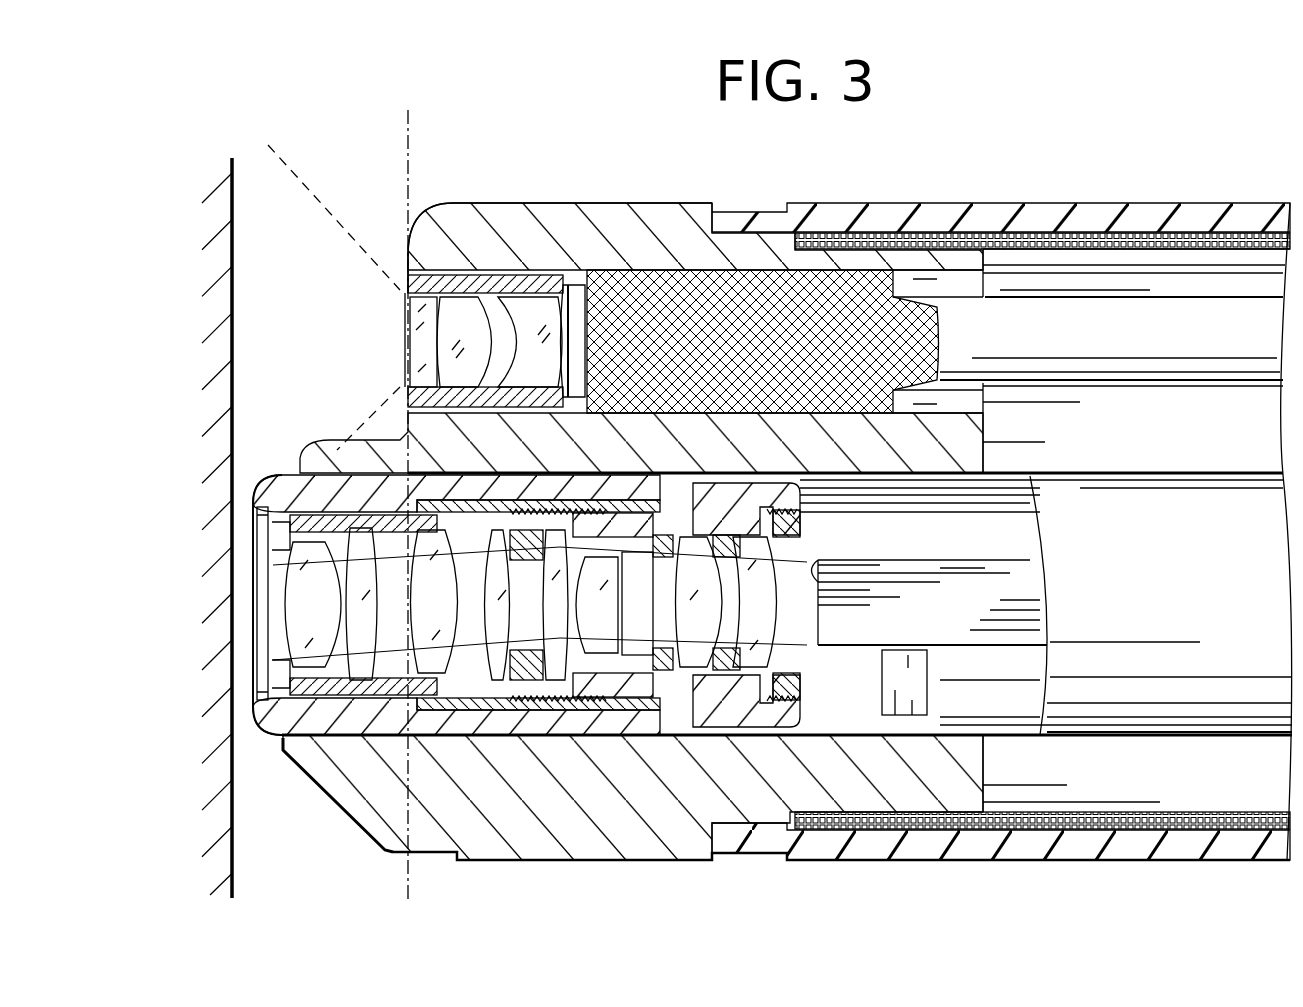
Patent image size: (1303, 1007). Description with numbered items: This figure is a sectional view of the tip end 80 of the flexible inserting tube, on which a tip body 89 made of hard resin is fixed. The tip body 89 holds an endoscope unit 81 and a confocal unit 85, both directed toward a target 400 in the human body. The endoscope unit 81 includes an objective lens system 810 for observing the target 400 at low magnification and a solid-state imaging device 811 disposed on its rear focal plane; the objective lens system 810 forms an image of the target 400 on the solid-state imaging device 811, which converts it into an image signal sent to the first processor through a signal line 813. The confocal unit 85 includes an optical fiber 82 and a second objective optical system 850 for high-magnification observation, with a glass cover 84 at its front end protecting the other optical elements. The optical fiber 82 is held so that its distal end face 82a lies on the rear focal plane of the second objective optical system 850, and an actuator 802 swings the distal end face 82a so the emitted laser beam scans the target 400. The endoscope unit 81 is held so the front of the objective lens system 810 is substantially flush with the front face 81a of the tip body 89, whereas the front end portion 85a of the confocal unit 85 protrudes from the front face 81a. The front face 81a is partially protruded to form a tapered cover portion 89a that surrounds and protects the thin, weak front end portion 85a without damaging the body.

The target 400 is at (283, 303).
The tip end 80 is at (917, 878).
The endoscope unit 81 is at (518, 254).
The front face 81a is at (408, 262).
The objective lens system 810 is at (382, 340).
The solid-state imaging device 811 is at (574, 313).
The signal line 813 is at (1123, 310).
The confocal unit 85 is at (665, 750).
The front end portion 85a is at (402, 742).
The glass cover 84 is at (272, 660).
The second objective optical system 850 is at (657, 735).
The optical fiber 82 is at (890, 577).
The distal end face 82a is at (808, 570).
The actuator 802 is at (897, 677).
The tip body 89 is at (513, 863).
The cover portion 89a is at (357, 820).